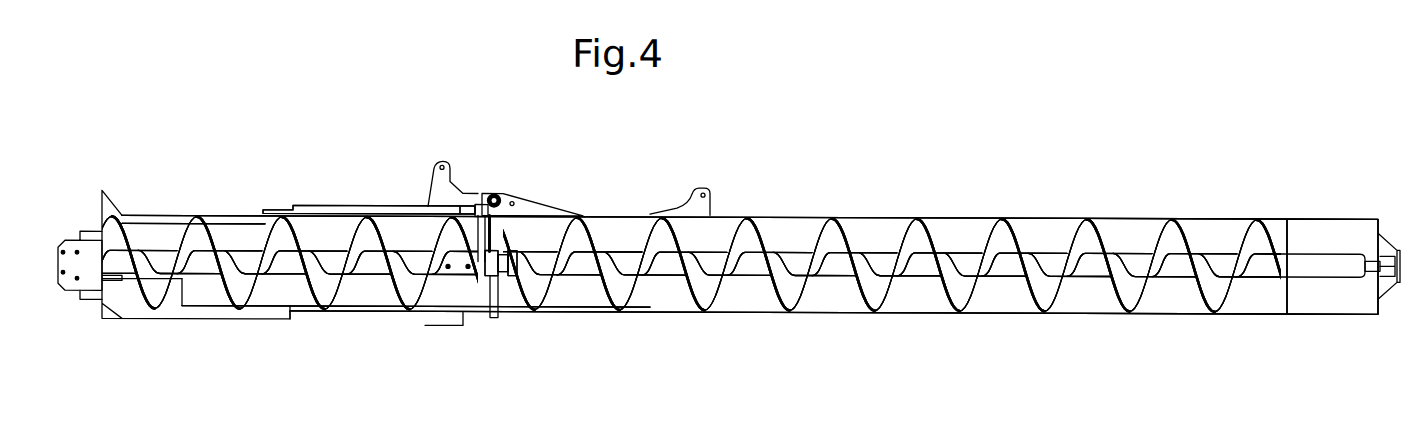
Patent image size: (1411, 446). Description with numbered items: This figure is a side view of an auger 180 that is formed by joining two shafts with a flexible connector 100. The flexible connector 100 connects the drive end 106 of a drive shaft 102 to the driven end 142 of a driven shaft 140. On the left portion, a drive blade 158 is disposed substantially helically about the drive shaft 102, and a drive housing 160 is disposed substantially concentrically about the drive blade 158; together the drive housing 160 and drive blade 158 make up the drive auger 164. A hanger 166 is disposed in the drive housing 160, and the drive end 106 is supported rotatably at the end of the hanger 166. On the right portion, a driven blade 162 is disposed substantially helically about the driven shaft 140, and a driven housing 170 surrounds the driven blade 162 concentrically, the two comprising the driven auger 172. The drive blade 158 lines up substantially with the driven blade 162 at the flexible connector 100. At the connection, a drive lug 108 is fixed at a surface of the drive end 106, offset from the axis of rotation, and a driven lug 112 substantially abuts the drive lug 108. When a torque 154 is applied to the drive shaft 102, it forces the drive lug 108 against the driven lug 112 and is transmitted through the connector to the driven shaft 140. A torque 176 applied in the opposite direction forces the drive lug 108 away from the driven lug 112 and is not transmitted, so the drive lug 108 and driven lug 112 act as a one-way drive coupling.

The flexible connector 100 is at (518, 285).
The drive shaft 102 is at (687, 206).
The drive end 106 is at (410, 245).
The drive lug 108 is at (487, 285).
The driven lug 112 is at (503, 285).
The driven shaft 140 is at (568, 260).
The driven end 142 is at (919, 227).
The torque 154 is at (131, 205).
The drive blade 158 is at (413, 306).
The drive housing 160 is at (314, 203).
The driven blade 162 is at (814, 213).
The drive auger 164 is at (369, 165).
The hanger 166 is at (496, 192).
The driven housing 170 is at (965, 211).
The driven auger 172 is at (750, 211).
The torque 176 is at (190, 352).
The auger 180 is at (707, 157).